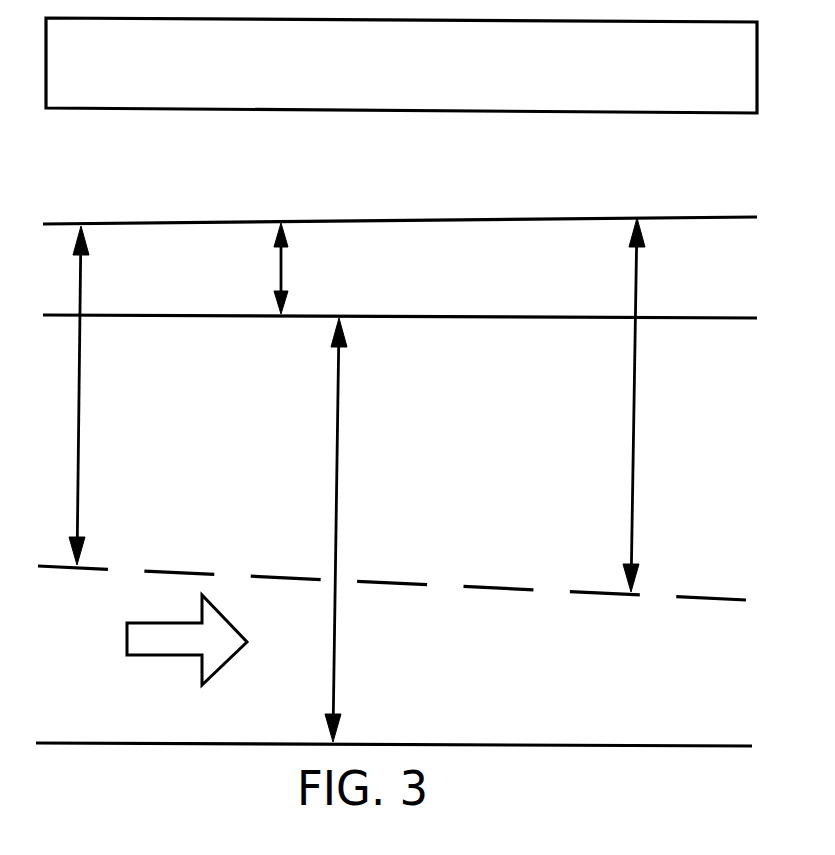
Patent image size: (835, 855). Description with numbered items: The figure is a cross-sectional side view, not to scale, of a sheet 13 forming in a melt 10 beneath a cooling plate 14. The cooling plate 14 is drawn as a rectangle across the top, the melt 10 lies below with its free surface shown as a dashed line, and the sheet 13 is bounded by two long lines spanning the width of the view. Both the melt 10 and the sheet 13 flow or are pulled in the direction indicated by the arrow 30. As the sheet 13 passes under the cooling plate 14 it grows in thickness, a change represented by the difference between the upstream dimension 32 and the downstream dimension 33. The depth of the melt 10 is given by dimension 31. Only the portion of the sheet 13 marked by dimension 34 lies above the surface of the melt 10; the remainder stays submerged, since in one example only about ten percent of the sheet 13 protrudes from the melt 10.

The cooling plate 14 is at (492, 78).
The sheet 13 is at (462, 270).
The melt 10 is at (455, 676).
The arrow 30 is at (214, 651).
The dimension 31 is at (350, 530).
The dimension 32 is at (91, 395).
The dimension 33 is at (649, 405).
The dimension 34 is at (294, 268).